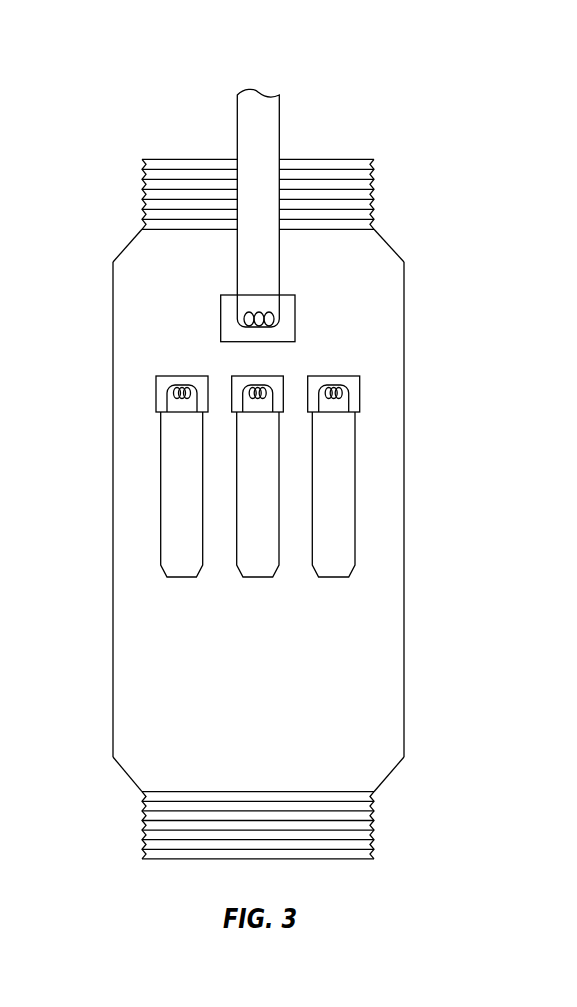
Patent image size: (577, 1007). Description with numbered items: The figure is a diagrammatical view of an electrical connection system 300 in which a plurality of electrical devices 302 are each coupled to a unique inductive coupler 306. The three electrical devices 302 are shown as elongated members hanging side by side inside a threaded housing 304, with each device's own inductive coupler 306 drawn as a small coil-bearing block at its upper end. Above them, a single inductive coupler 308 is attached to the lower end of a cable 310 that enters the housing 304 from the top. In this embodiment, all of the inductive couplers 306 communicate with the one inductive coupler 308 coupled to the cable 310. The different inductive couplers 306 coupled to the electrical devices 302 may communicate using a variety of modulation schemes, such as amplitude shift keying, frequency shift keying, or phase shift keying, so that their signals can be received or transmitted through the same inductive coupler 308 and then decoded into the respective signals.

The electrical connection system 300 is at (420, 112).
The electrical device 302 is at (185, 565).
The housing 304 is at (140, 693).
The inductive coupler 306 is at (156, 393).
The inductive coupler 308 is at (231, 319).
The cable 310 is at (250, 272).